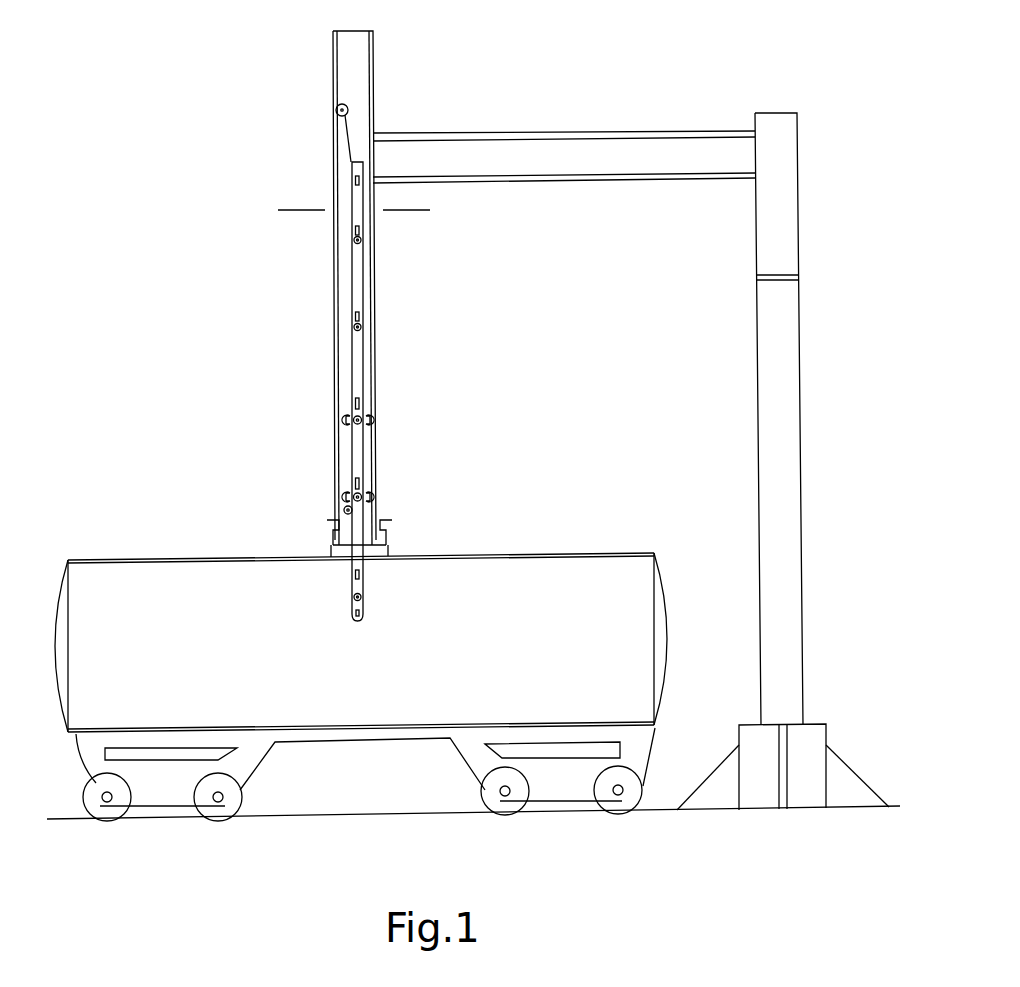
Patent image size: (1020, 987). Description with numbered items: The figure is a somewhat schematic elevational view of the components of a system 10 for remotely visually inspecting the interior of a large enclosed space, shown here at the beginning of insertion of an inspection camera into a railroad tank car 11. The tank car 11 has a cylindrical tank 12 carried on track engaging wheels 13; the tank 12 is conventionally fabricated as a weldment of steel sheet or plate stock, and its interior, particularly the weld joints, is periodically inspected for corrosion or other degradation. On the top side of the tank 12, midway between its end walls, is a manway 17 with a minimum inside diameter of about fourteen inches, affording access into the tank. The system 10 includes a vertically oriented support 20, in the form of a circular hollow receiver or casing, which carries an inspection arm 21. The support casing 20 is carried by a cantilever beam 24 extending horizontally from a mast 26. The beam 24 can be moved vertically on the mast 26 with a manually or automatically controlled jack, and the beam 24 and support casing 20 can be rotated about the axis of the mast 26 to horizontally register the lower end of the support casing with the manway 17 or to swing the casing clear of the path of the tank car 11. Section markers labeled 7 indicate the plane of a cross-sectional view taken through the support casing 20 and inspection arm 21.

The system 10 is at (575, 112).
The railroad tank car 11 is at (141, 537).
The cylindrical tank 12 is at (268, 557).
The track engaging wheels 13 is at (107, 813).
The manway 17 is at (386, 540).
The support 20 is at (377, 372).
The inspection arm 21 is at (374, 447).
The cantilever beam 24 is at (614, 133).
The mast 26 is at (757, 385).
The section line 7- 7 is at (287, 198).